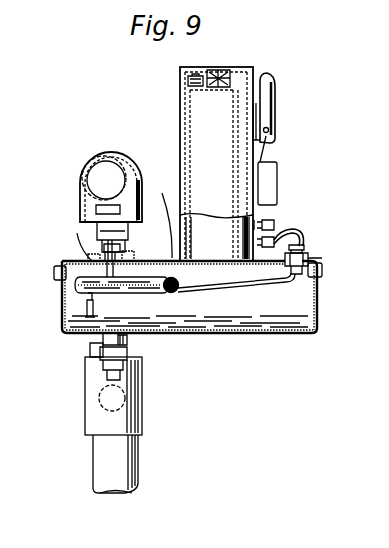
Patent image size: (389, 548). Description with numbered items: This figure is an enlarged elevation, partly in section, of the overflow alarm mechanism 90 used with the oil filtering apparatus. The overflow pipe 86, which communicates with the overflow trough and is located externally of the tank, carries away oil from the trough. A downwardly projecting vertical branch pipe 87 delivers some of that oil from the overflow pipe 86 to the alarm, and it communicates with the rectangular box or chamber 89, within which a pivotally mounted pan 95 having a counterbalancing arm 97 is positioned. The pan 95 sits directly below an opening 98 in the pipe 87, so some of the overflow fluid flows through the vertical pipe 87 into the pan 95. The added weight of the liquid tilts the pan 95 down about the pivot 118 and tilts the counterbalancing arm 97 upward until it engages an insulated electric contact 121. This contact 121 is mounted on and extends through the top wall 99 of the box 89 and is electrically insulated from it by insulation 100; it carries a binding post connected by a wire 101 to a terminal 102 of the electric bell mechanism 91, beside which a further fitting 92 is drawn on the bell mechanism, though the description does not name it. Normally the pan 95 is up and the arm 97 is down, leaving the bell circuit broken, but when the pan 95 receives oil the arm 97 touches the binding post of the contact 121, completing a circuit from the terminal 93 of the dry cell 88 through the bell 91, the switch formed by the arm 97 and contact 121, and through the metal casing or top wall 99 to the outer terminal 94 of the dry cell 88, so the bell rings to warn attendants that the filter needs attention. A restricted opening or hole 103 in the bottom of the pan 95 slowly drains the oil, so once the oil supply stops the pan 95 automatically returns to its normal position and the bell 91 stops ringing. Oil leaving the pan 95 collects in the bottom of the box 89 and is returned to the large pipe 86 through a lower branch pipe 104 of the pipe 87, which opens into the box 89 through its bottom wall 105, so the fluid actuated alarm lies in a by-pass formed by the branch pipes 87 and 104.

The overflow pipe 86 is at (140, 455).
The branch pipe 87 is at (121, 250).
The dry cell 88 is at (198, 107).
The chamber 89 is at (320, 304).
The overflow alarm mechanism 90 is at (256, 66).
The electric bell mechanism 91 is at (279, 177).
The fitting 92 is at (275, 240).
The terminal 93 is at (219, 70).
The outer terminal 94 is at (188, 77).
The pan 95 is at (76, 285).
The counterbalancing arm 97 is at (240, 284).
The opening 98 is at (78, 256).
The top wall 99 is at (160, 218).
The insulation 100 is at (309, 258).
The wire 101 is at (304, 232).
The terminal 102 is at (276, 222).
The restricted opening 103 is at (86, 303).
The lower branch pipe 104 is at (90, 348).
The bottom wall 105 is at (235, 334).
The pivot 118 is at (188, 276).
The insulated electric contact 121 is at (305, 247).